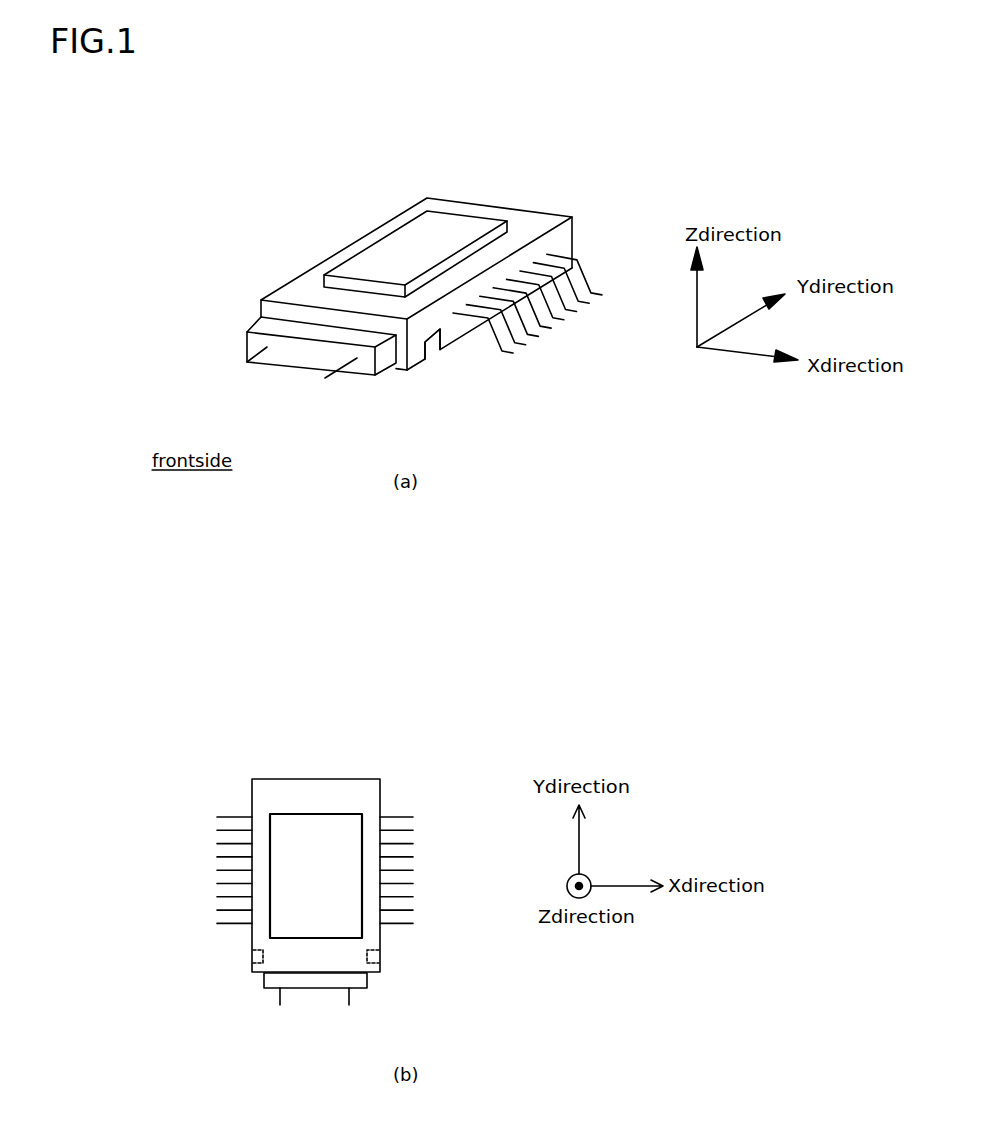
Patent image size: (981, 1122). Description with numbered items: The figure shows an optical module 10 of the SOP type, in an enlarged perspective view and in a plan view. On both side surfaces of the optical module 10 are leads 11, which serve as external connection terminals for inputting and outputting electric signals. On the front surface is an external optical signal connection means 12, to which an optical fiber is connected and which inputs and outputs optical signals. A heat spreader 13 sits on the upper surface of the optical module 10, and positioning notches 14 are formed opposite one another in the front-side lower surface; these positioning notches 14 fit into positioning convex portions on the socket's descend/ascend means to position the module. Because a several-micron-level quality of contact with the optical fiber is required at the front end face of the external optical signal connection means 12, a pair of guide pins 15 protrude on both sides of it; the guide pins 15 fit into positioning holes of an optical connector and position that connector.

The optical module 10 is at (651, 89).
The leads 11 is at (493, 328).
The external optical signal connection means 12 is at (256, 326).
The heat spreader 13 is at (454, 219).
The positioning notches 14 is at (431, 346).
The guide pins 15 is at (235, 363).